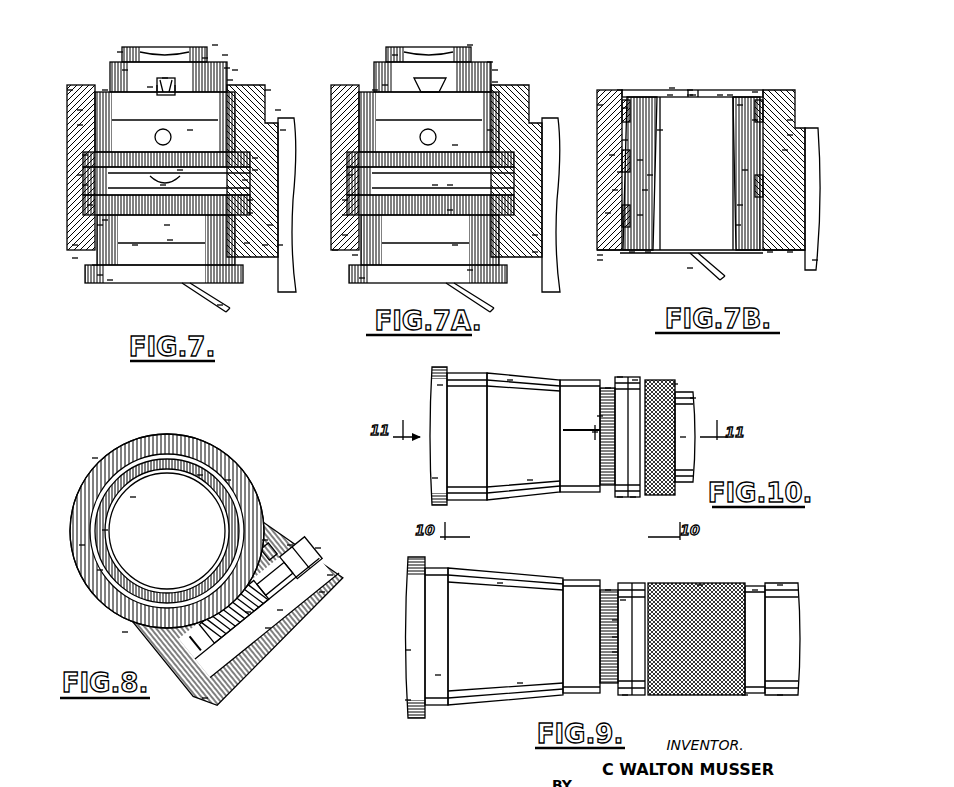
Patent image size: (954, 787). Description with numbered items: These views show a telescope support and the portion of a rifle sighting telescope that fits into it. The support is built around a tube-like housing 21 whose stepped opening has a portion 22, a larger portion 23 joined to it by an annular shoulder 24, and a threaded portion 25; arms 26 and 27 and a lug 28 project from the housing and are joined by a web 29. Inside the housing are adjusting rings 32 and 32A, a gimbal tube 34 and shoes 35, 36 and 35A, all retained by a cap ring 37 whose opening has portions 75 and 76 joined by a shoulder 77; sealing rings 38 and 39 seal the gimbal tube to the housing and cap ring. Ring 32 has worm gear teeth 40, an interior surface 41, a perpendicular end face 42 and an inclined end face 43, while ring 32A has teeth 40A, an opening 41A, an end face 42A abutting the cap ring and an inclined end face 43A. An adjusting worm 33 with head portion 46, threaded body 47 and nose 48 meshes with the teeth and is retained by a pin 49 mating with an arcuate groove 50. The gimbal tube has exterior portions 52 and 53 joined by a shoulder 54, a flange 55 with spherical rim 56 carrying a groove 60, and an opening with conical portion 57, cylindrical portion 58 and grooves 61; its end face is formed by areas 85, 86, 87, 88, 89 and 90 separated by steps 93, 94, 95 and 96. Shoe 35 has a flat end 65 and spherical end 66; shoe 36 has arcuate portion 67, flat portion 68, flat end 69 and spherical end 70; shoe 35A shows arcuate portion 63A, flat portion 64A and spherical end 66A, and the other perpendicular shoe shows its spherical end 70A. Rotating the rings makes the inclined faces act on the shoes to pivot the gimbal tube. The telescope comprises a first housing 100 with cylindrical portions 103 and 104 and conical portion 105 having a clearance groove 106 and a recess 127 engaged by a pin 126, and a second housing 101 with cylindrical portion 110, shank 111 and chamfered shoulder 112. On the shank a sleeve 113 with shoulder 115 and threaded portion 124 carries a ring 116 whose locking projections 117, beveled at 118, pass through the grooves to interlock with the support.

In FIG. 7, the housing 21 is at (75, 258).
In FIG. 7A, the housing 21 is at (355, 255).
In FIG. 7B, the housing 21 is at (600, 260).
In FIG. 8, the housing 21 is at (95, 458).
In FIG. 7, the opening portion 22 is at (105, 220).
In FIG. 7B, the opening portion 22 is at (632, 252).
In FIG. 7, the larger diametered opening portion 23 is at (167, 225).
In FIG. 7B, the larger diametered opening portion 23 is at (745, 170).
In FIG. 8, the larger diametered opening portion 23 is at (100, 570).
In FIG. 7, the annular shoulder 24 is at (280, 245).
In FIG. 7A, the annular shoulder 24 is at (335, 250).
In FIG. 7, the threaded portion 25 is at (80, 110).
In FIG. 7, the arm 26 is at (220, 305).
In FIG. 7B, the arm 26 is at (690, 268).
In FIG. 8, the arm 26 is at (330, 575).
In FIG. 7, the arm 27 is at (265, 245).
In FIG. 7B, the arm 27 is at (815, 260).
In FIG. 8, the arm 27 is at (205, 698).
In FIG. 8, the lug 28 is at (280, 610).
In FIG. 8, the web 29 is at (268, 628).
In FIG. 7, the adjusting ring 32 is at (170, 240).
In FIG. 7A, the adjusting ring 32 is at (535, 252).
In FIG. 7B, the adjusting ring 32 is at (608, 213).
In FIG. 8, the adjusting ring 32 is at (82, 545).
In FIG. 7, the adjusting ring 32A is at (255, 158).
In FIG. 7A, the adjusting ring 32A is at (490, 130).
In FIG. 7B, the adjusting ring 32A is at (625, 108).
In FIG. 8, the adjusting worm 33 is at (318, 548).
In FIG. 7, the gimbal tube 34 is at (135, 245).
In FIG. 7A, the gimbal tube 34 is at (470, 270).
In FIG. 7B, the gimbal tube 34 is at (648, 252).
In FIG. 8, the gimbal tube 34 is at (133, 497).
In FIG. 7, the shoe 35 is at (270, 225).
In FIG. 7A, the shoe 35 is at (345, 235).
In FIG. 7, the shoe 35A is at (163, 185).
In FIG. 7A, the shoe 35A is at (455, 245).
In FIG. 7, the shoe 36 is at (245, 180).
In FIG. 7A, the shoe 36 is at (350, 175).
In FIG. 7, the cap ring 37 is at (268, 90).
In FIG. 7B, the cap ring 37 is at (620, 90).
In FIG. 7, the sealing ring 38 is at (75, 245).
In FIG. 7B, the sealing ring 38 is at (600, 255).
In FIG. 7, the sealing ring 39 is at (70, 90).
In FIG. 7B, the sealing ring 39 is at (600, 105).
In FIG. 7, the worm gear teeth 40 is at (100, 225).
In FIG. 7, the worm gear teeth 40A is at (80, 125).
In FIG. 7B, the interior lateral surface 41 is at (738, 225).
In FIG. 8, the interior lateral surface 41 is at (105, 530).
In FIG. 7B, the axial opening 41A is at (640, 160).
In FIG. 7, the end face 42 is at (180, 170).
In FIG. 7, the end face 42A is at (190, 130).
In FIG. 7, the end face 43 is at (85, 155).
In FIG. 7A, the end face 43 is at (455, 145).
In FIG. 7B, the end face 43 is at (625, 140).
In FIG. 7, the end face 43A is at (255, 170).
In FIG. 7A, the end face 43A is at (345, 200).
In FIG. 8, the head portion 46 is at (265, 540).
In FIG. 8, the threaded body portion 47 is at (248, 612).
In FIG. 8, the nose portion 48 is at (125, 632).
In FIG. 8, the pin 49 is at (290, 545).
In FIG. 8, the arcuate groove 50 is at (322, 592).
In FIG. 7, the exterior lateral surface portion 52 is at (247, 243).
In FIG. 7B, the exterior lateral surface portion 52 is at (790, 135).
In FIG. 8, the exterior lateral surface portion 52 is at (200, 475).
In FIG. 7, the exterior lateral surface portion 53 is at (278, 110).
In FIG. 7B, the exterior lateral surface portion 53 is at (790, 120).
In FIG. 7, the annular shoulder 54 is at (283, 130).
In FIG. 7B, the annular shoulder 54 is at (785, 150).
In FIG. 7, the annular flange 55 is at (80, 175).
In FIG. 7B, the annular flange 55 is at (790, 252).
In FIG. 7, the rim 56 is at (85, 185).
In FIG. 7B, the rim 56 is at (620, 172).
In FIG. 8, the conical portion 57 is at (228, 480).
In FIG. 7B, the cylindrical portion 58 is at (755, 92).
In FIG. 7, the groove 60 is at (250, 213).
In FIG. 7A, the groove 60 is at (345, 215).
In FIG. 7B, the grooves 61 is at (740, 105).
In FIG. 7A, the arcuate portion 63A is at (450, 185).
In FIG. 7A, the flat portion 64A is at (435, 185).
In FIG. 7B, the flat surface 65 is at (740, 205).
In FIG. 7B, the spherical surface 66 is at (770, 252).
In FIG. 7A, the spherical end surface 66A is at (450, 210).
In FIG. 7B, the arcuate portion 67 is at (650, 175).
In FIG. 7B, the flat portion 68 is at (640, 215).
In FIG. 7B, the flat surface 69 is at (645, 190).
In FIG. 7B, the spherical surface 70 is at (615, 190).
In FIG. 7B, the spherical end surface 70A is at (672, 88).
In FIG. 7B, the opening portion 75 is at (660, 130).
In FIG. 7B, the opening portion 76 is at (690, 95).
In FIG. 7B, the annular shoulder 77 is at (755, 120).
In FIG. 7, the end face area 85 is at (105, 90).
In FIG. 7A, the end face area 85 is at (375, 90).
In FIG. 7B, the end face area 86 is at (730, 95).
In FIG. 7, the end face area 87 is at (230, 80).
In FIG. 7A, the end face area 87 is at (495, 82).
In FIG. 7B, the end face area 88 is at (670, 95).
In FIG. 7, the end face area 89 is at (165, 78).
In FIG. 7B, the end face area 90 is at (690, 90).
In FIG. 7, the step 93 is at (227, 68).
In FIG. 7B, the step 94 is at (693, 95).
In FIG. 7, the step 95 is at (150, 87).
In FIG. 7B, the step 96 is at (720, 95).
In FIG. 7, the first tubular housing 100 is at (110, 280).
In FIG. 7A, the first tubular housing 100 is at (362, 278).
In FIG. 10, the first tubular housing 100 is at (435, 478).
In FIG. 9, the first tubular housing 100 is at (408, 700).
In FIG. 7, the second tubular housing 101 is at (215, 45).
In FIG. 7A, the second tubular housing 101 is at (470, 45).
In FIG. 10, the second tubular housing 101 is at (693, 398).
In FIG. 9, the second tubular housing 101 is at (780, 585).
In FIG. 7, the cylindrical portion 103 is at (100, 275).
In FIG. 9, the cylindrical portion 103 is at (408, 652).
In FIG. 7, the cylindrical portion 104 is at (95, 265).
In FIG. 10, the cylindrical portion 104 is at (440, 385).
In FIG. 9, the cylindrical portion 104 is at (438, 675).
In FIG. 10, the conical portion 105 is at (510, 380).
In FIG. 9, the conical portion 105 is at (500, 583).
In FIG. 10, the annular clearance groove 106 is at (530, 480).
In FIG. 9, the annular clearance groove 106 is at (520, 683).
In FIG. 9, the cylindrical portion 110 is at (780, 695).
In FIG. 7, the shank portion 111 is at (120, 52).
In FIG. 7A, the shank portion 111 is at (395, 55).
In FIG. 10, the shank portion 111 is at (683, 437).
In FIG. 9, the shank portion 111 is at (755, 590).
In FIG. 9, the chamfered annular shoulder 112 is at (745, 695).
In FIG. 7, the tubular sleeve 113 is at (225, 55).
In FIG. 7A, the tubular sleeve 113 is at (490, 62).
In FIG. 10, the tubular sleeve 113 is at (675, 384).
In FIG. 9, the tubular sleeve 113 is at (700, 585).
In FIG. 7, the shoulder 115 is at (205, 58).
In FIG. 7A, the shoulder 115 is at (385, 85).
In FIG. 10, the shoulder 115 is at (600, 416).
In FIG. 9, the shoulder 115 is at (623, 600).
In FIG. 7, the ring 116 is at (235, 70).
In FIG. 7A, the ring 116 is at (495, 70).
In FIG. 10, the ring 116 is at (608, 388).
In FIG. 9, the ring 116 is at (608, 590).
In FIG. 7, the locking projections 117 is at (125, 70).
In FIG. 10, the locking projections 117 is at (620, 377).
In FIG. 9, the locking projections 117 is at (615, 637).
In FIG. 7, the bevel 118 is at (160, 85).
In FIG. 10, the bevel 118 is at (635, 380).
In FIG. 9, the bevel 118 is at (615, 620).
In FIG. 10, the externally threaded portion 124 is at (595, 432).
In FIG. 9, the externally threaded portion 124 is at (615, 652).
In FIG. 7, the pin 126 is at (155, 137).
In FIG. 7A, the pin 126 is at (428, 129).
In FIG. 10, the recess 127 is at (566, 430).